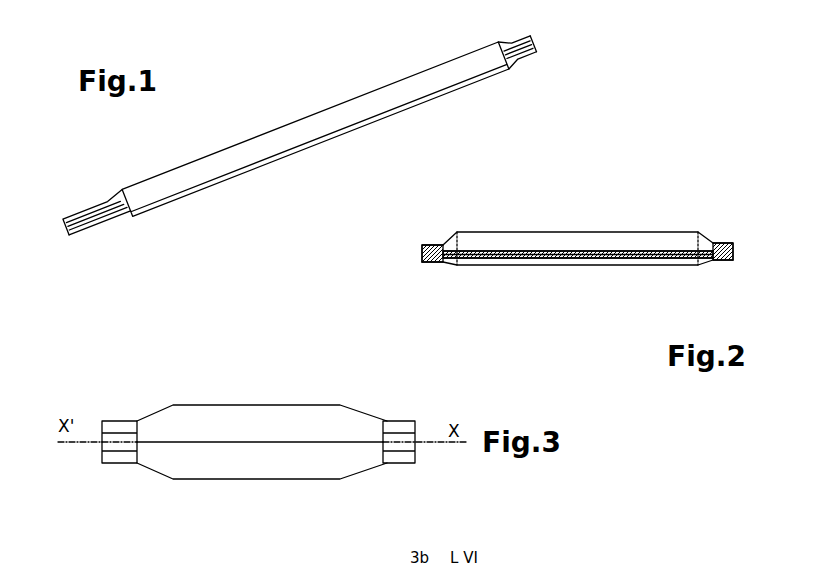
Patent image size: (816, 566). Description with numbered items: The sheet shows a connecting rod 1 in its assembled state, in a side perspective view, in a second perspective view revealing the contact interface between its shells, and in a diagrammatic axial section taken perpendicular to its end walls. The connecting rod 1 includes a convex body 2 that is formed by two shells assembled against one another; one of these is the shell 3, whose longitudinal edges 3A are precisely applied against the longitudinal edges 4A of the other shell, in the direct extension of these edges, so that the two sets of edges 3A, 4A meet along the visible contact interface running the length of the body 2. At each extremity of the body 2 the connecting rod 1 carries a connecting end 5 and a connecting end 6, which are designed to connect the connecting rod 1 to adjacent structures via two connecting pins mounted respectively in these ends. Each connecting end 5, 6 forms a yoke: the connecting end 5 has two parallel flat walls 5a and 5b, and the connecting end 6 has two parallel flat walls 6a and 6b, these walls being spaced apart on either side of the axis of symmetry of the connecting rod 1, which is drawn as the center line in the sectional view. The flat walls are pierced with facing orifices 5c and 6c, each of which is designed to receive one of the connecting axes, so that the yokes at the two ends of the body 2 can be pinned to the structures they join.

In FIG. 1, the connecting rod 1 is at (319, 148).
In FIG. 2, the connecting rod 1 is at (572, 259).
In FIG. 3, the connecting rod 1 is at (258, 452).
In FIG. 1, the convex body 2 is at (259, 132).
In FIG. 2, the convex body 2 is at (694, 215).
In FIG. 3, the shell 3 is at (282, 398).
In FIG. 2, the longitudinal edges 3A is at (620, 259).
In FIG. 2, the longitudinal edges 4A is at (532, 280).
In FIG. 2, the connecting end 5 is at (460, 213).
In FIG. 1, the flat wall 5a is at (58, 213).
In FIG. 2, the flat wall 5a is at (422, 245).
In FIG. 3, the flat wall 5a is at (122, 419).
In FIG. 1, the flat wall 5b is at (82, 243).
In FIG. 2, the flat wall 5b is at (424, 262).
In FIG. 3, the flat wall 5b is at (120, 465).
In FIG. 1, the orifice 5c is at (73, 217).
In FIG. 2, the connecting end 6 is at (733, 216).
In FIG. 1, the flat wall 6a is at (498, 43).
In FIG. 2, the flat wall 6a is at (722, 243).
In FIG. 3, the flat wall 6a is at (398, 420).
In FIG. 1, the flat wall 6b is at (524, 58).
In FIG. 2, the flat wall 6b is at (720, 260).
In FIG. 3, the flat wall 6b is at (398, 466).
In FIG. 1, the orifice 6c is at (530, 37).